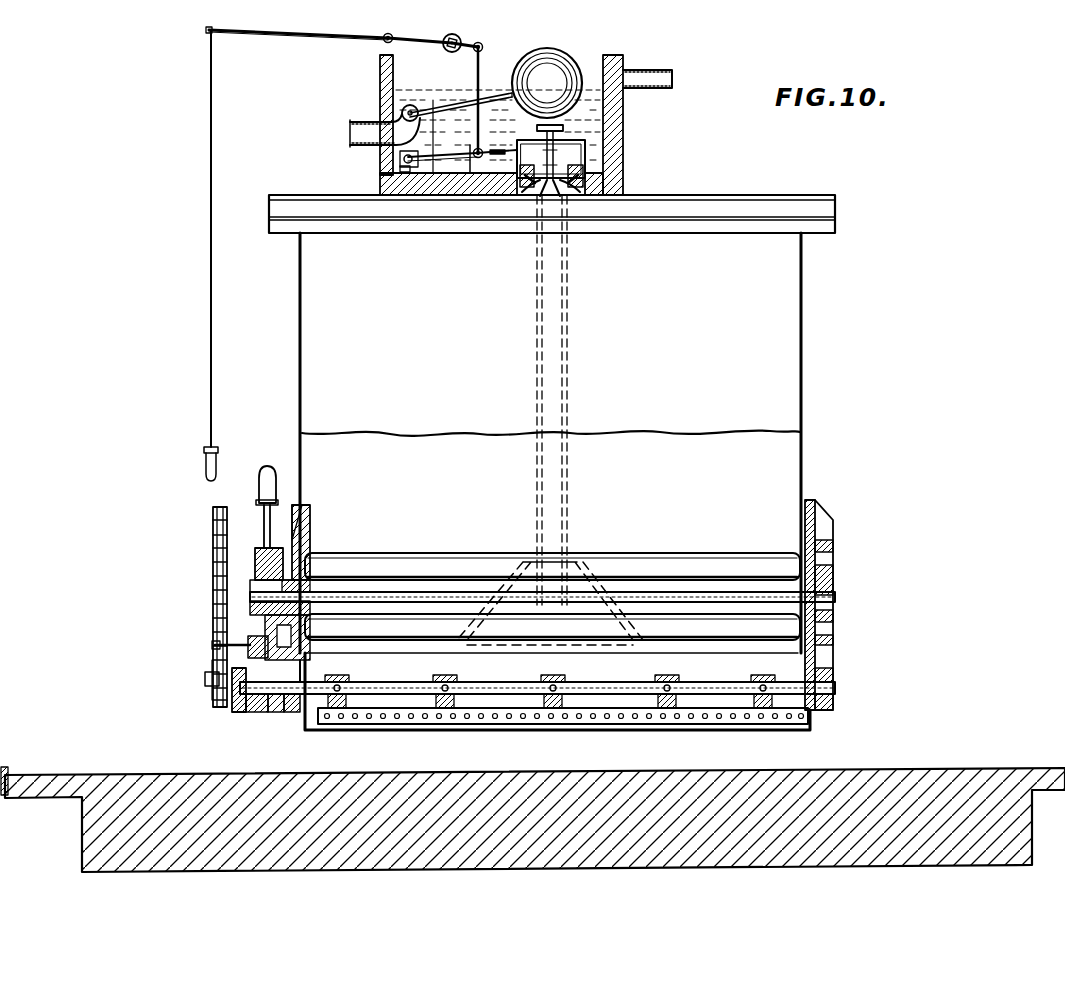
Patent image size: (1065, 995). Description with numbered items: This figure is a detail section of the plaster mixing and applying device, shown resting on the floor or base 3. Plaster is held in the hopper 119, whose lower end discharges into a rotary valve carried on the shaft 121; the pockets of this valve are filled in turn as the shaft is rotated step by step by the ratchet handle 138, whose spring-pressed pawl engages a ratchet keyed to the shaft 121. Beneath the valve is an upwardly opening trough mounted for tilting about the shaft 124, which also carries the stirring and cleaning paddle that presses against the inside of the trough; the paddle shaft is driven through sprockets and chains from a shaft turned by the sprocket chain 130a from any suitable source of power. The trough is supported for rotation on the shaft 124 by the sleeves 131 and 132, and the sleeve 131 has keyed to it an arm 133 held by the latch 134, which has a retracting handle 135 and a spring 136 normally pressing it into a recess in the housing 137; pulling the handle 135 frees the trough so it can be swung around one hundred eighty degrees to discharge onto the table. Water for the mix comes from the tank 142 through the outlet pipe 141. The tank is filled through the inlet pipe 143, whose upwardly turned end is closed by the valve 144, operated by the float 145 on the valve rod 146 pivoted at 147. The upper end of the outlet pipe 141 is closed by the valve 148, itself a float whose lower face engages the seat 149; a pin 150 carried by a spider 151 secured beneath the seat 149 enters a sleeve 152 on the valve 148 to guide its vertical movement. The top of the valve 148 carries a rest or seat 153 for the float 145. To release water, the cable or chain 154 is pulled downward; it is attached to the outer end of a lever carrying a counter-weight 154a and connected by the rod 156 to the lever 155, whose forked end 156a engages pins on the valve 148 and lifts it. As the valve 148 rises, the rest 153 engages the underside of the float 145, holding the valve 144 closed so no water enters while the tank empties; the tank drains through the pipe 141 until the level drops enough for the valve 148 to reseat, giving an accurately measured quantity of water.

The floor 3 is at (120, 776).
The hopper 119 is at (803, 368).
The shaft 121 is at (390, 595).
The shaft 124 is at (613, 720).
The sprocket chain 130a is at (214, 560).
The sleeve 131 is at (288, 715).
The sleeve 132 is at (822, 710).
The arm 133 is at (262, 715).
The latch 134 is at (297, 715).
The retracting handle 135 is at (212, 646).
The spring 136 is at (233, 708).
The housing 137 is at (305, 652).
The ratchet handle 138 is at (262, 512).
The outlet pipe 141 is at (558, 368).
The tank 142 is at (381, 64).
The inlet pipe 143 is at (358, 140).
The valve 144 is at (400, 112).
The float 145 is at (560, 68).
The valve rod 146 is at (462, 160).
The pivot 147 is at (436, 150).
The valve 148 is at (590, 158).
The seat 149 is at (598, 190).
The pin 150 is at (556, 195).
The spider 151 is at (533, 190).
The sleeve 152 is at (592, 180).
The rest or seat 153 is at (365, 31).
The cable or chain 154 is at (210, 258).
The counter-weight 154a is at (473, 28).
The lever 155 is at (408, 180).
The rod 156 is at (481, 74).
The forked end 156a is at (590, 148).